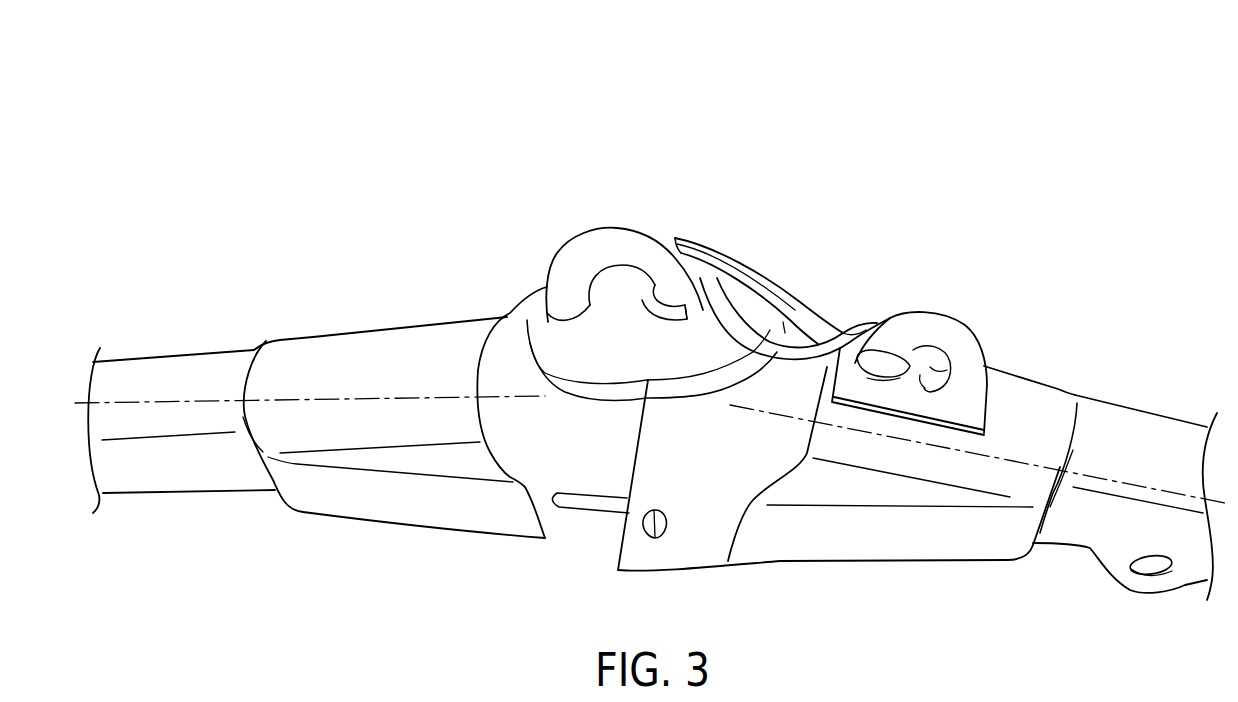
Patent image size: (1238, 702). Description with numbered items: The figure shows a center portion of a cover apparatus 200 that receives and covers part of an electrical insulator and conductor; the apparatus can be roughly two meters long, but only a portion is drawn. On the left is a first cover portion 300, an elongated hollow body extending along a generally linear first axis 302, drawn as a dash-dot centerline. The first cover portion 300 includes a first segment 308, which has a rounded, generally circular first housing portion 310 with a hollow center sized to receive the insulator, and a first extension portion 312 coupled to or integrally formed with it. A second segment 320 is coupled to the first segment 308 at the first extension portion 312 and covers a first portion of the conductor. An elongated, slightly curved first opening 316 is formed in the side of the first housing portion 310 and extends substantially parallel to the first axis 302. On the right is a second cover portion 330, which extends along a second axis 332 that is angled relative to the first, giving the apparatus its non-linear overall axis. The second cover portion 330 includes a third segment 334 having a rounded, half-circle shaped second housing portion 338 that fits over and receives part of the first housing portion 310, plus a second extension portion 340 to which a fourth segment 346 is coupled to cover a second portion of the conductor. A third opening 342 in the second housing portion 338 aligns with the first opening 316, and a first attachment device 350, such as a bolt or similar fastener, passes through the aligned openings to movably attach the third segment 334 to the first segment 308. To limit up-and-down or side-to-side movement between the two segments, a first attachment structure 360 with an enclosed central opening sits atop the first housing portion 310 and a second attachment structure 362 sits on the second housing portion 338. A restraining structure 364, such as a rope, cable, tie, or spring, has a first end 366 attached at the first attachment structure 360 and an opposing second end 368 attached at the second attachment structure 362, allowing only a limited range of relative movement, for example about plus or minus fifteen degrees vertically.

The cover apparatus 200 is at (232, 90).
The first cover portion 300 is at (267, 343).
The first axis 302 is at (151, 399).
The first segment 308 is at (343, 332).
The first housing portion 310 is at (520, 307).
The first extension portion 312 is at (374, 331).
The first opening 316 is at (582, 510).
The second segment 320 is at (183, 353).
The second cover portion 330 is at (1070, 391).
The second axis 332 is at (1142, 483).
The third segment 334 is at (1020, 372).
The second housing portion 338 is at (785, 282).
The second extension portion 340 is at (917, 561).
The third opening 342 is at (667, 514).
The fourth segment 346 is at (1140, 408).
The first attachment device 350 is at (653, 539).
The first attachment structure 360 is at (617, 227).
The second attachment structure 362 is at (942, 312).
The restraining structure 364 is at (793, 348).
The first end 366 is at (727, 278).
The second end 368 is at (872, 316).